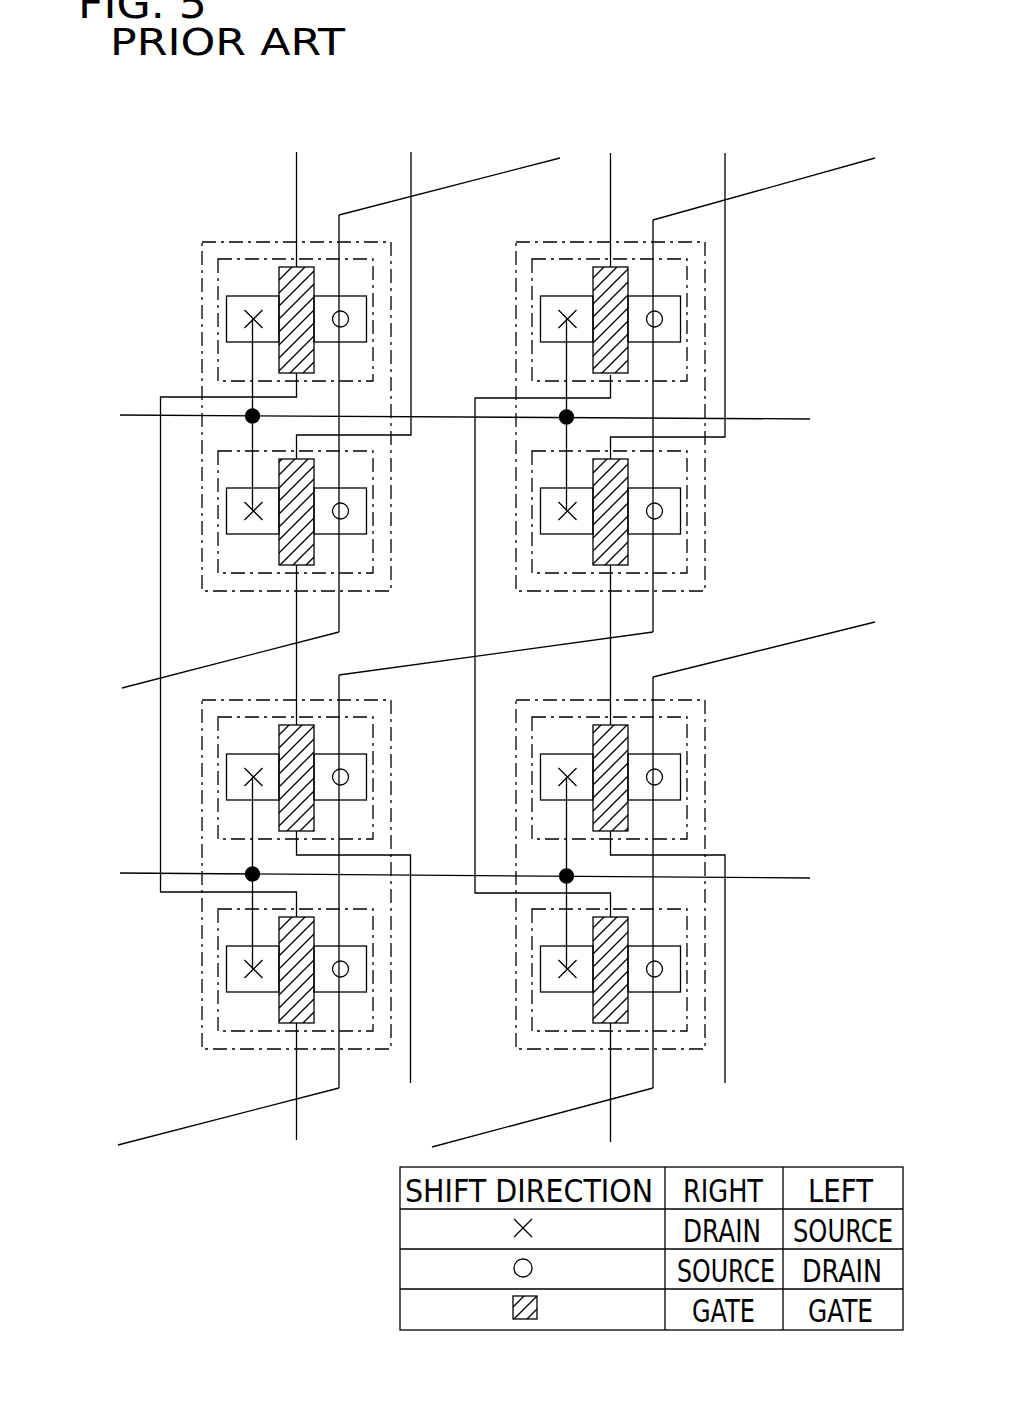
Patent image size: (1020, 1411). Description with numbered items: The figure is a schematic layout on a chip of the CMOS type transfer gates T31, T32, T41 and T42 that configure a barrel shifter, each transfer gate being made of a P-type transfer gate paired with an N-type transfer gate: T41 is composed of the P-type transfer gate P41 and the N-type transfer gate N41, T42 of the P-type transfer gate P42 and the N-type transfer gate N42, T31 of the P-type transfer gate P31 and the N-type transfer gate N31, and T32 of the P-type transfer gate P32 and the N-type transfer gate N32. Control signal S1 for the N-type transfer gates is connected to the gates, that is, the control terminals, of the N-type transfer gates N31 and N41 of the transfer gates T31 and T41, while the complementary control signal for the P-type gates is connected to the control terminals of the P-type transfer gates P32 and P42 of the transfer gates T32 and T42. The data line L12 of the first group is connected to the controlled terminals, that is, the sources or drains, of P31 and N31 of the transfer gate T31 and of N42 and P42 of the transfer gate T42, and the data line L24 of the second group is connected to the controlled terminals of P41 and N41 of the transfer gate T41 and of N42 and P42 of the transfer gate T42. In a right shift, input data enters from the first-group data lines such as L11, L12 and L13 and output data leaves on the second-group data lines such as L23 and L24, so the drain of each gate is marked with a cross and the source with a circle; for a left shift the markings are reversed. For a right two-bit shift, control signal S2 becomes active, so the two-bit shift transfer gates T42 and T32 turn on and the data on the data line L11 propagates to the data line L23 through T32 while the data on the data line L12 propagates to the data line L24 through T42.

The P-type transfer gate P41 is at (212, 272).
The N-type transfer gate N41 is at (379, 543).
The P-type transfer gate P42 is at (526, 272).
The N-type transfer gate N42 is at (693, 543).
The N-type transfer gate N31 is at (379, 751).
The P-type transfer gate P31 is at (211, 988).
The N-type transfer gate N32 is at (694, 753).
The P-type transfer gate P32 is at (525, 988).
The CMOS type transfer gate T41 is at (196, 348).
The CMOS type transfer gate T42 is at (510, 348).
The CMOS type transfer gate T31 is at (391, 763).
The CMOS type transfer gate T32 is at (705, 768).
The data line of the second group L24 is at (790, 418).
The data line of the second group L23 is at (792, 878).
The data line of the first group L13 is at (122, 688).
The data line of the first group L12 is at (118, 1145).
The data line of the first group L11 is at (507, 1130).
The control signal for N type transfer gates S1 is at (361, 287).
The control signal for N-type transfer gate S2 is at (677, 289).